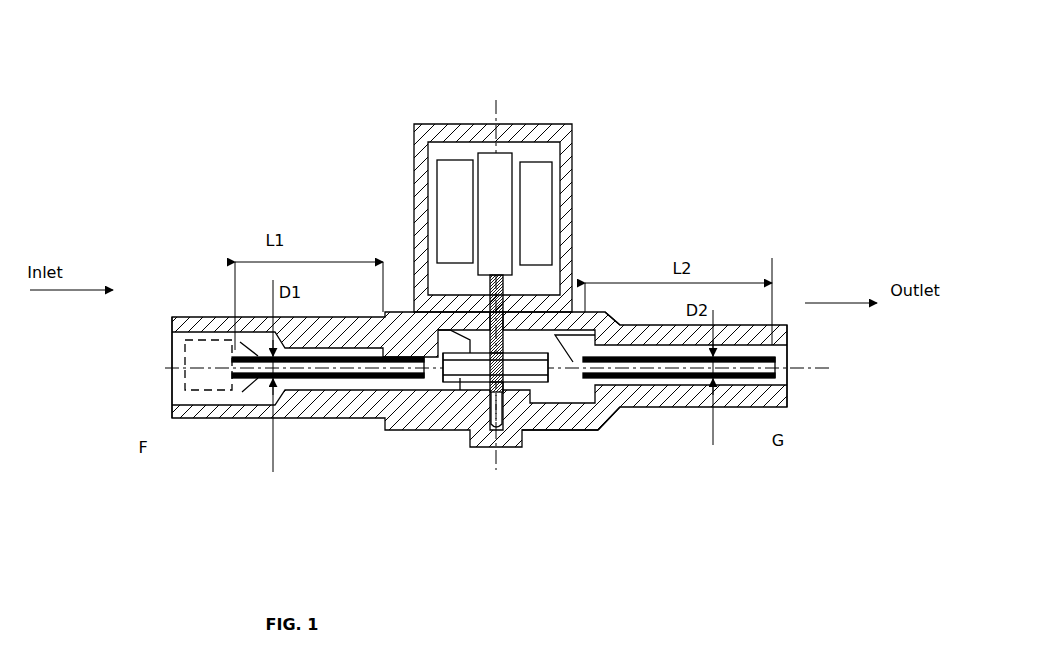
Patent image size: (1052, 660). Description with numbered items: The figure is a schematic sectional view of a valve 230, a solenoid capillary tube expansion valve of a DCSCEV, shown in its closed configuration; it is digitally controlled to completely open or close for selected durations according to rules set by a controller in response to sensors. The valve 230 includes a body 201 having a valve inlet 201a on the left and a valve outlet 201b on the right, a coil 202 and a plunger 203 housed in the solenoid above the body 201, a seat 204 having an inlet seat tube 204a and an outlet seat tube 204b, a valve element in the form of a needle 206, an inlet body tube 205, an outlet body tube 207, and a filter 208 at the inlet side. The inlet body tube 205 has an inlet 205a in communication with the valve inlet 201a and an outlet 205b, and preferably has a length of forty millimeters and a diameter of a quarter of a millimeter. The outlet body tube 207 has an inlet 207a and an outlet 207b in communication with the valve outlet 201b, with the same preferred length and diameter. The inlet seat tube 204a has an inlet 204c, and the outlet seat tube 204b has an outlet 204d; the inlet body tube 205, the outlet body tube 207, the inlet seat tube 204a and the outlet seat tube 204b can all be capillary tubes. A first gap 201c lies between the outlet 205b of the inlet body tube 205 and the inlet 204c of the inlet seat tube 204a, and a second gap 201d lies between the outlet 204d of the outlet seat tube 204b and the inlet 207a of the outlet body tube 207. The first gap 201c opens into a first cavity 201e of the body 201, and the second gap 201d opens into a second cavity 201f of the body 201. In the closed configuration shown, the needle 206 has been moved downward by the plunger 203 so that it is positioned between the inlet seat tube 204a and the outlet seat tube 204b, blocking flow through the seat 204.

The valve 230 is at (434, 80).
The body 201 is at (412, 124).
The valve inlet 201a is at (183, 344).
The valve outlet 201b is at (778, 360).
The first gap 201c is at (433, 350).
The second gap 201d is at (548, 400).
The first cavity 201e is at (510, 270).
The second cavity 201f is at (596, 401).
The coil 202 is at (495, 123).
The plunger 203 is at (497, 205).
The seat 204 is at (517, 352).
The inlet seat tube 204a is at (483, 412).
The outlet seat tube 204b is at (518, 395).
The inlet of the inlet seat tube 204c is at (430, 408).
The outlet of the outlet seat tube 204d is at (527, 392).
The inlet body tube 205 is at (345, 377).
The inlet of the inlet body tube 205a is at (224, 385).
The outlet of the inlet body tube 205b is at (410, 400).
The needle 206 is at (558, 432).
The outlet body tube 207 is at (653, 376).
The inlet of the outlet body tube 207a is at (586, 284).
The outlet of the outlet body tube 207b is at (778, 378).
The filter 208 is at (218, 390).